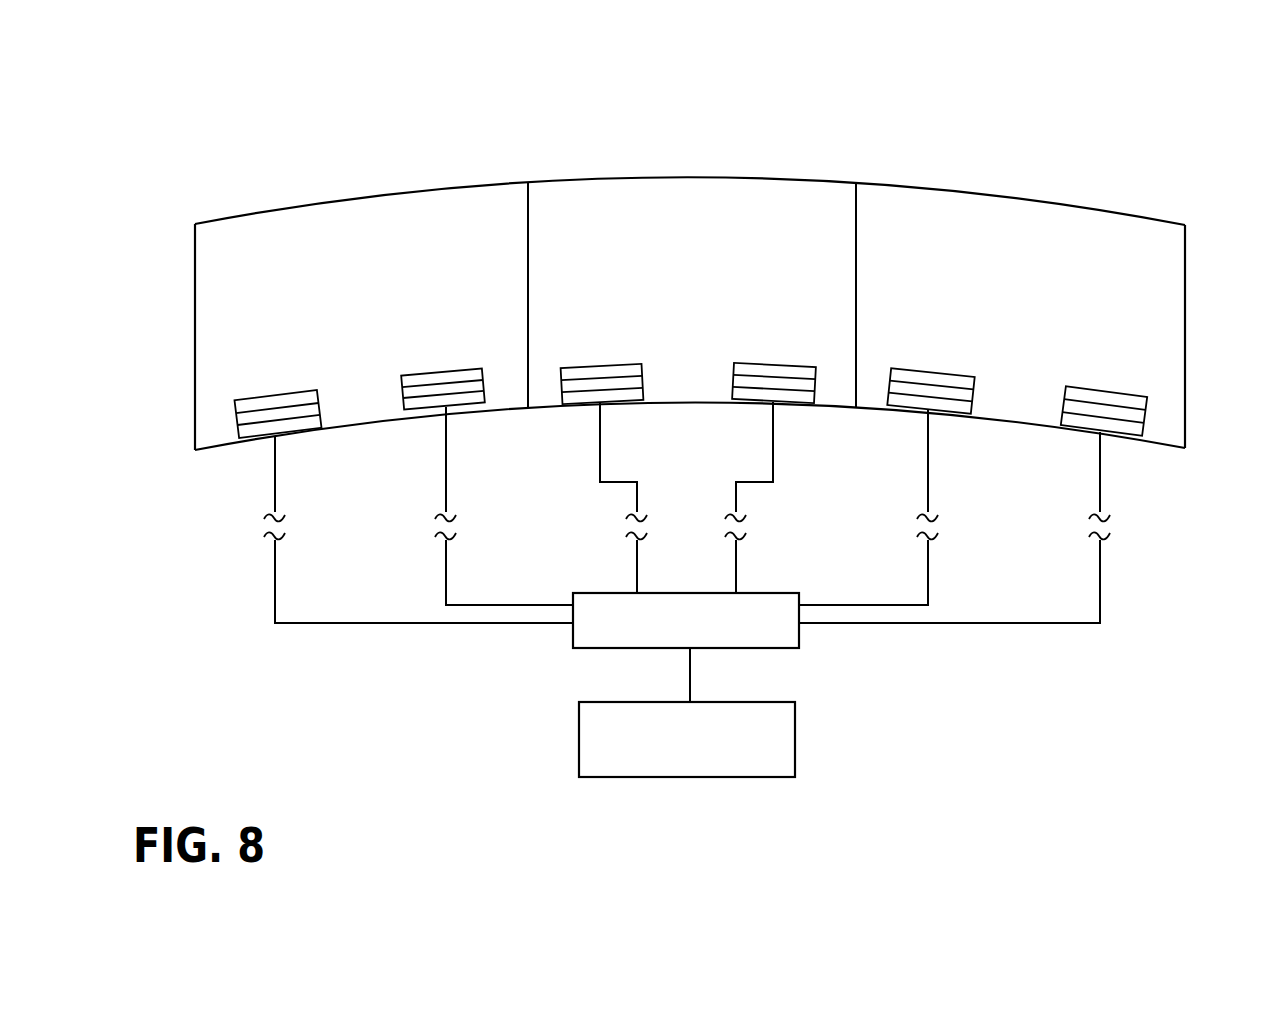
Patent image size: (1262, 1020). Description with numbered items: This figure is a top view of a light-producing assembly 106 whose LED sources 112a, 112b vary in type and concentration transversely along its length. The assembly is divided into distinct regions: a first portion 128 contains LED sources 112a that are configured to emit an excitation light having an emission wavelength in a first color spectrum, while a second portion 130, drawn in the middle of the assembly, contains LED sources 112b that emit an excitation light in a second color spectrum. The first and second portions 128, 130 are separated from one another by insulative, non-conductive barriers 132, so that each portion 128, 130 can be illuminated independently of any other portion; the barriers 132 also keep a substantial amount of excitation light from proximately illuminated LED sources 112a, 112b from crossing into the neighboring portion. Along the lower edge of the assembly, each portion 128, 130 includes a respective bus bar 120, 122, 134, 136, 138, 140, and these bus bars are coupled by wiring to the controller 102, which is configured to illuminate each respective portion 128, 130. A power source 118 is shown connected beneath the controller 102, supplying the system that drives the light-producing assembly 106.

The light-producing assembly 106 is at (1152, 96).
The LED sources 112a is at (396, 198).
The LED sources 112b is at (708, 192).
The first portion 128 is at (277, 190).
The second portion 130 is at (643, 176).
The insulative barrier 132 is at (532, 186).
The bus bar 120 is at (253, 433).
The bus bar 122 is at (425, 410).
The bus bar 134 is at (588, 403).
The bus bar 136 is at (790, 403).
The bus bar 138 is at (945, 414).
The bus bar 140 is at (1125, 438).
The controller 102 is at (800, 638).
The power source 118 is at (795, 722).